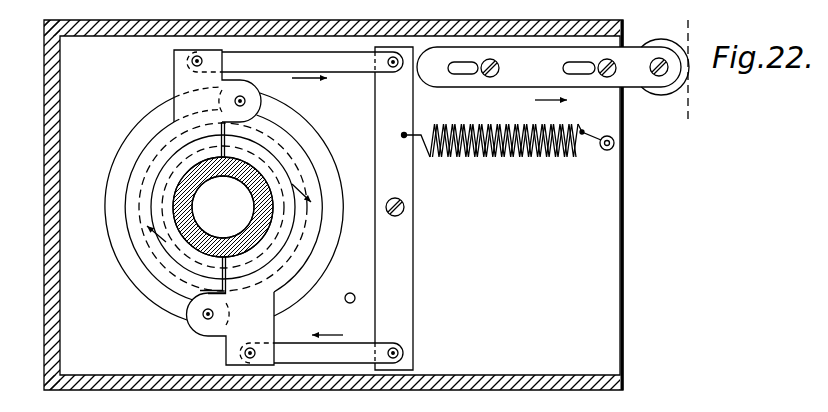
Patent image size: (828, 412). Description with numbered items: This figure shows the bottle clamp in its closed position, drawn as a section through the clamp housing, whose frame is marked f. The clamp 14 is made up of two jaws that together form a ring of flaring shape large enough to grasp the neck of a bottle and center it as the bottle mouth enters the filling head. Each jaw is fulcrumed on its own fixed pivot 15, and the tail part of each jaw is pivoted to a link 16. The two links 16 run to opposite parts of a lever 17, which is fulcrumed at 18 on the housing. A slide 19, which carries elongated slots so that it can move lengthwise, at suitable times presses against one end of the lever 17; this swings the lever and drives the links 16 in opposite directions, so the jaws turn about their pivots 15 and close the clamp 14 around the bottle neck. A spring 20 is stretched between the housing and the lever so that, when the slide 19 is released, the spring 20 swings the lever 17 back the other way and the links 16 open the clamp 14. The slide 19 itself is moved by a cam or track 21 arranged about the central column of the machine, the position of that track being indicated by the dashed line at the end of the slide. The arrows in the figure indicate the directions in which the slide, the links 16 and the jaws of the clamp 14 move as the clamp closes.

The frame f is at (322, 205).
The clamp 14 is at (145, 250).
The fixed pivot 15 is at (244, 100).
The link 16 is at (349, 60).
The lever 17 is at (410, 208).
The fulcrum 18 is at (405, 207).
The slide 19 is at (553, 71).
The spring 20 is at (491, 157).
The cam or track 21 is at (702, 71).